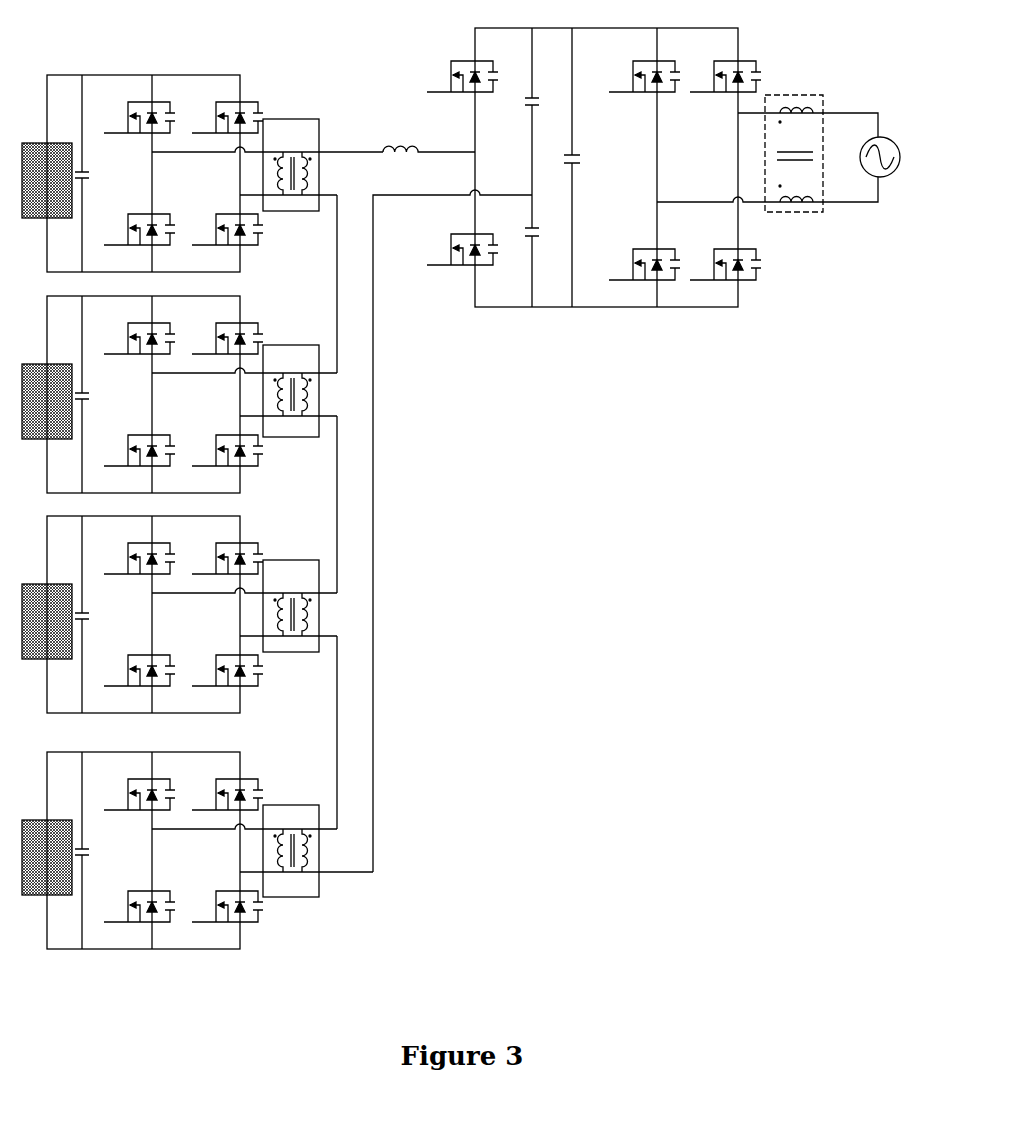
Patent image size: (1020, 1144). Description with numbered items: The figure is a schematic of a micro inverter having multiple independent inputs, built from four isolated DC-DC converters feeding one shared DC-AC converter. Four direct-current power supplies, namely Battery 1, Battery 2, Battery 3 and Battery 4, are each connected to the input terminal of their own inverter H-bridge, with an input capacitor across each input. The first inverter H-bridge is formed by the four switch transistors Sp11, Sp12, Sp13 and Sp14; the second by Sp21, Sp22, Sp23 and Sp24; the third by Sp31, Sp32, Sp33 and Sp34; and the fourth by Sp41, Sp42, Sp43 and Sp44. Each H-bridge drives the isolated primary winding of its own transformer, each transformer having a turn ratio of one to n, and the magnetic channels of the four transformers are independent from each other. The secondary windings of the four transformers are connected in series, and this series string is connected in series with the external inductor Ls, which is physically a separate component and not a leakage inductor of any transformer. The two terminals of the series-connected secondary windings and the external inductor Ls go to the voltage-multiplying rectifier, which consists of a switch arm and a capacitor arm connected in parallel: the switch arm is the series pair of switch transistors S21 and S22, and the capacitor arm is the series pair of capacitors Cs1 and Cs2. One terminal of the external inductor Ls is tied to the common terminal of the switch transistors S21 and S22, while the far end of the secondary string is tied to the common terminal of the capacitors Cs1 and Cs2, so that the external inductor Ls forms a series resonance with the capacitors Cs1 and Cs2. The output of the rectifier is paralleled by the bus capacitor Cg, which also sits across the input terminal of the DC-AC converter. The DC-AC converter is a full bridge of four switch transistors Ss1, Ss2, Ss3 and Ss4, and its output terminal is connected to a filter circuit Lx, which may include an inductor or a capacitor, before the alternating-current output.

The battery Battery 1 is at (47, 180).
The battery Battery 2 is at (47, 401).
The battery Battery 3 is at (47, 621).
The battery Battery 4 is at (47, 857).
The switch transistor Sp11 is at (131, 117).
The switch transistor Sp12 is at (131, 229).
The switch transistor Sp13 is at (223, 117).
The switch transistor Sp14 is at (223, 229).
The switch transistor Sp21 is at (131, 338).
The switch transistor Sp22 is at (131, 450).
The switch transistor Sp23 is at (223, 338).
The switch transistor Sp24 is at (223, 450).
The switch transistor Sp31 is at (131, 558).
The switch transistor Sp32 is at (131, 670).
The switch transistor Sp33 is at (223, 558).
The switch transistor Sp34 is at (223, 670).
The switch transistor Sp41 is at (131, 794).
The switch transistor Sp42 is at (131, 906).
The switch transistor Sp43 is at (223, 794).
The switch transistor Sp44 is at (223, 906).
The external inductor Ls is at (429, 139).
The switch transistor S21 is at (462, 63).
The switch transistor S22 is at (462, 235).
The capacitor Cs1 is at (546, 111).
The capacitor Cs2 is at (546, 251).
The bus capacitor Cg is at (583, 167).
The switch transistor Ss1 is at (644, 63).
The switch transistor Ss2 is at (644, 250).
The switch transistor Ss3 is at (725, 63).
The switch transistor Ss4 is at (725, 250).
The filter circuit Lx is at (794, 167).